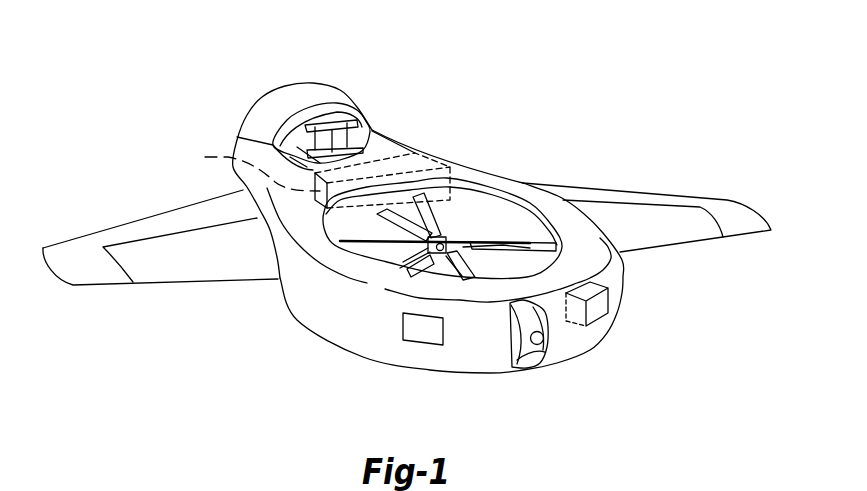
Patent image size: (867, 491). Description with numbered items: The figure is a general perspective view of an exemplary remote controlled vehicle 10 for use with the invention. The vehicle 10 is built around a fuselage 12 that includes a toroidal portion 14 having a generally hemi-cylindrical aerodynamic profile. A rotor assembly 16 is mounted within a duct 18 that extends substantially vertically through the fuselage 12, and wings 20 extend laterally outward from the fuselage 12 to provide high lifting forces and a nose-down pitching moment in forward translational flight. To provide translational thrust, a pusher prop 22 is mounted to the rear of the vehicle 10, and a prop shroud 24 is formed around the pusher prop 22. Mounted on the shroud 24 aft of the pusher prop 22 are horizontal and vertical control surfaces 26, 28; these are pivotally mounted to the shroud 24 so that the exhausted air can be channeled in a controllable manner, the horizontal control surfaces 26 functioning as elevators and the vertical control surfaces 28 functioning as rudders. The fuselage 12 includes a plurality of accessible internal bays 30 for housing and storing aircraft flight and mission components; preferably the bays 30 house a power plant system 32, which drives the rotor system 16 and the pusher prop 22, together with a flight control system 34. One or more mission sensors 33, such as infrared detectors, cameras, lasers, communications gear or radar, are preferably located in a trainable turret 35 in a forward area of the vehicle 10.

The vehicle 10 is at (380, 72).
The fuselage 12 is at (577, 227).
The toroidal portion 14 is at (577, 343).
The rotor assembly 16 is at (450, 221).
The duct 18 is at (527, 227).
The wings 20 is at (720, 207).
The pusher prop 22 is at (297, 137).
The prop shroud 24 is at (330, 93).
The horizontal control surfaces 26 is at (323, 123).
The vertical control surfaces 28 is at (343, 137).
The internal bays 30 is at (444, 169).
The power plant system 32 is at (593, 283).
The mission sensors 33 is at (536, 345).
The flight control system 34 is at (247, 168).
The trainable turret 35 is at (524, 348).